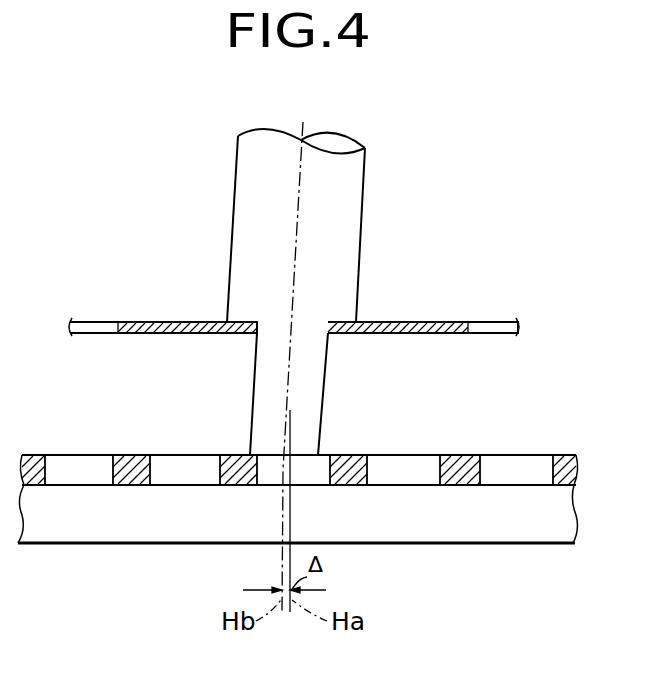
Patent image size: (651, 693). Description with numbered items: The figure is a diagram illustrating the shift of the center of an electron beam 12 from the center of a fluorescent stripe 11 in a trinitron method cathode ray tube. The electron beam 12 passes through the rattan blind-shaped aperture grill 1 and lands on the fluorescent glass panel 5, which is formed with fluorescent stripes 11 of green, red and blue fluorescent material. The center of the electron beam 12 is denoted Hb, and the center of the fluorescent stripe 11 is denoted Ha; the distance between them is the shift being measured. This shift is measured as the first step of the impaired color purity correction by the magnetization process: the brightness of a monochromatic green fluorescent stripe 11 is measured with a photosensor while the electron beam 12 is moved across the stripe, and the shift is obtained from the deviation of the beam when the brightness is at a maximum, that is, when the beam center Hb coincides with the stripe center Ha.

The aperture grill 1 is at (417, 322).
The fluorescent glass panel 5 is at (128, 523).
The fluorescent stripe 11 is at (320, 477).
The electron beam 12 is at (360, 160).